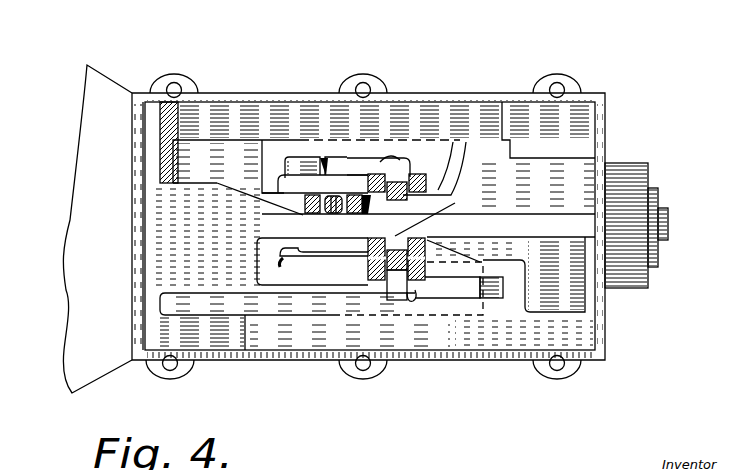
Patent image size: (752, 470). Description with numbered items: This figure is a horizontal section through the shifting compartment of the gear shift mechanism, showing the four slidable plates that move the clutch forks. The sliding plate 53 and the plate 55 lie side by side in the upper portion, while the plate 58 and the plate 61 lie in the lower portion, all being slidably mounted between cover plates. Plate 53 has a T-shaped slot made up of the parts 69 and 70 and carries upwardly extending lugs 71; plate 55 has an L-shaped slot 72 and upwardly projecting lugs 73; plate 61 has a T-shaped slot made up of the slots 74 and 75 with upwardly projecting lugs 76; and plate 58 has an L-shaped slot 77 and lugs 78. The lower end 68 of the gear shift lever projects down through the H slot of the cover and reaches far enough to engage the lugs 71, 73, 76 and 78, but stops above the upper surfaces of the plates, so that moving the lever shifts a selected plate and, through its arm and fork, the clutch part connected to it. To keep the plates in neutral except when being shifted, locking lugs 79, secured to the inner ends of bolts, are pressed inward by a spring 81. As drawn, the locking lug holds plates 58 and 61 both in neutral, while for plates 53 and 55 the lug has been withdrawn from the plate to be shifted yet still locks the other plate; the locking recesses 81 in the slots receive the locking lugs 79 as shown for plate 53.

The sliding plate 53 is at (222, 153).
The plate 55 is at (450, 122).
The plate 58 is at (497, 340).
The plate 61 is at (267, 300).
The lower end of gear shift lever 68 is at (339, 214).
The T-shaped slot part 69 is at (322, 155).
The T-shaped slot part 70 is at (398, 183).
The upwardly extending lugs 71 is at (311, 214).
The L-shaped slot 72 is at (360, 162).
The upwardly projecting lugs 73 is at (420, 182).
The T-shaped slot part 74 is at (260, 250).
The T-shaped slot part 75 is at (389, 382).
The upwardly projecting lugs 76 is at (398, 250).
The L-shaped slot 77 is at (473, 292).
The lugs 78 is at (440, 262).
The locking lugs 79 is at (452, 208).
The spring 81 is at (295, 174).